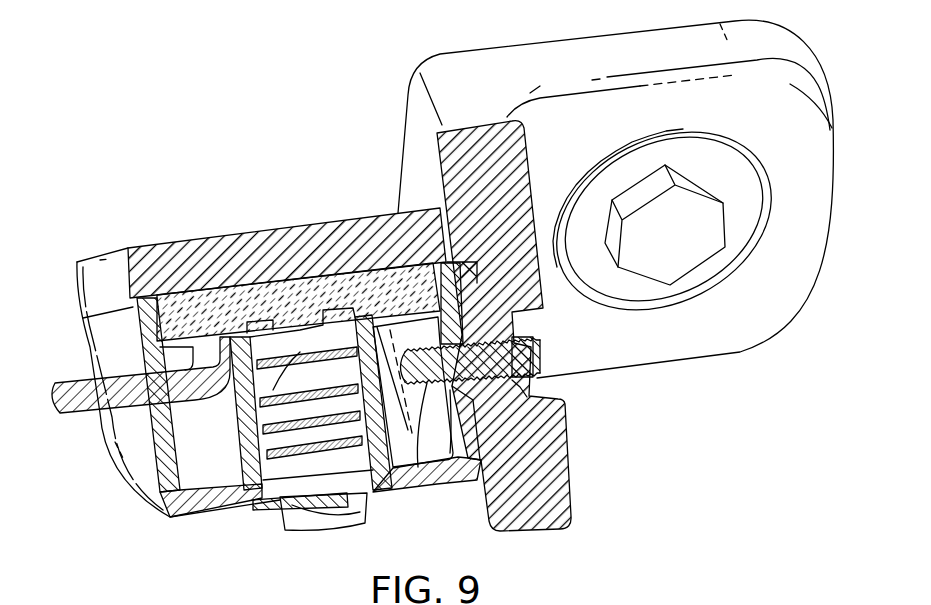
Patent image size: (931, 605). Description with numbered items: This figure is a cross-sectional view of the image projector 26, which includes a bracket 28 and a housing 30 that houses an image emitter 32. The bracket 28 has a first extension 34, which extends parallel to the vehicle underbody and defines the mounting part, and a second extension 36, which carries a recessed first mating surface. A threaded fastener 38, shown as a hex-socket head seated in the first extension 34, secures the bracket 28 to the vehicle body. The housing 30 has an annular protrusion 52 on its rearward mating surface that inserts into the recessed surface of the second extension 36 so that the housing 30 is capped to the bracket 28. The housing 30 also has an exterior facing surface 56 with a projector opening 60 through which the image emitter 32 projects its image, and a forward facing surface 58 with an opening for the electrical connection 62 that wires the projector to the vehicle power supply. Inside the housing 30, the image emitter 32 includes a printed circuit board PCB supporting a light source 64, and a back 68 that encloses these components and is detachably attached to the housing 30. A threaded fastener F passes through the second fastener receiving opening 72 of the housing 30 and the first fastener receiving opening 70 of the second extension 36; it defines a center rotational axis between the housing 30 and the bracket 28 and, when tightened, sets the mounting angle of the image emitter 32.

The image projector 26 is at (308, 68).
The bracket 28 is at (718, 404).
The housing 30 is at (158, 198).
The image emitter 32 is at (220, 453).
The first extension 34 is at (788, 147).
The second extension 36 is at (417, 160).
The fastener 38 is at (677, 243).
The annular protrusion 52 is at (466, 257).
The exterior facing surface 56 is at (438, 478).
The forward facing surface 58 is at (110, 358).
The projector opening 60 is at (307, 520).
The electrical connection 62 is at (80, 400).
The light source 64 is at (260, 417).
The back 68 is at (245, 270).
The first fastener receiving opening 70 is at (540, 382).
The second fastener receiving opening 72 is at (430, 383).
The fastener F is at (520, 353).
The printed circuit board PCB is at (327, 297).